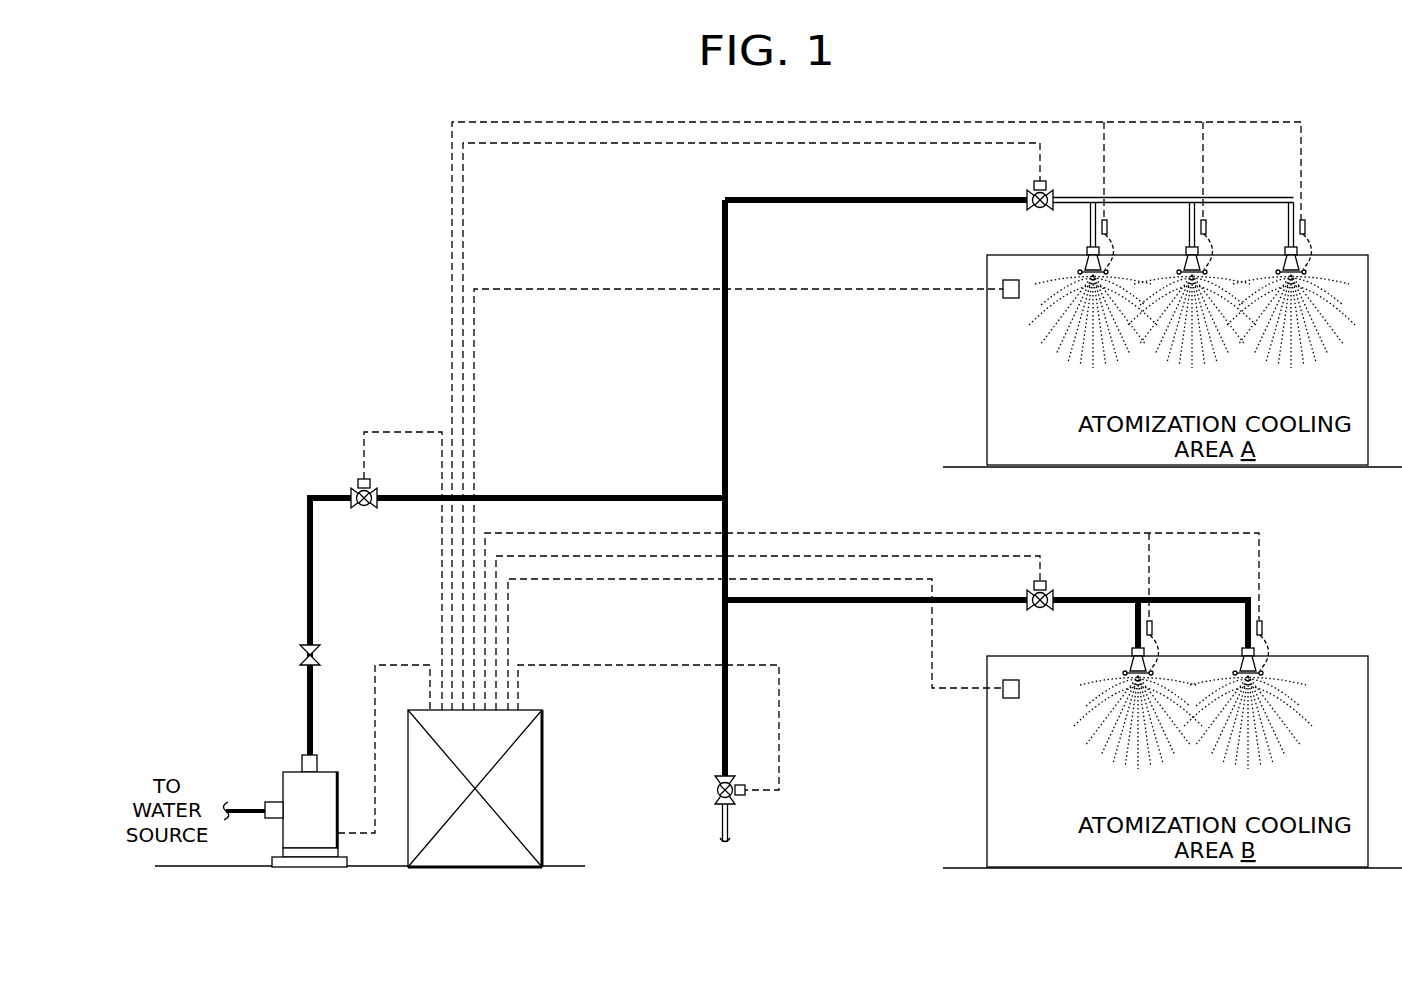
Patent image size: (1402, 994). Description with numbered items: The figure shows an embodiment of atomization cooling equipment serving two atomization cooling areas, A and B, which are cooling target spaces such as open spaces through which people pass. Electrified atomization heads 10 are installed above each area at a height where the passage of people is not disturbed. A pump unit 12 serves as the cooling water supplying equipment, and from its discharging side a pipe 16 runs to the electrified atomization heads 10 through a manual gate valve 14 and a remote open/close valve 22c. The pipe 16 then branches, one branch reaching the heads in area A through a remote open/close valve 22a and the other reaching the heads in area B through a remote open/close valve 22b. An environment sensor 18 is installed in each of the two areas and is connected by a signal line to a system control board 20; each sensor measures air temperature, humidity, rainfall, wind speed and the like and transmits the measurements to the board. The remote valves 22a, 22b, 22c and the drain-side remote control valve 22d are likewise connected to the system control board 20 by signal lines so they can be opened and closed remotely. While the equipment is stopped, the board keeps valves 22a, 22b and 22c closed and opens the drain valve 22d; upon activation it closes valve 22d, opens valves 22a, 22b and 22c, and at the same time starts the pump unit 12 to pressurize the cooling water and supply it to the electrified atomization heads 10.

The electrified atomization head 10 is at (1086, 270).
The pump unit 12 is at (284, 772).
The manual valve 14 is at (300, 656).
The pipe 16 is at (574, 497).
The environment sensor 18 is at (1003, 282).
The system control board 20 is at (545, 757).
The remote open/close valve 22a is at (1033, 191).
The remote open/close valve 22b is at (1052, 594).
The remote open/close valve 22c is at (366, 509).
The remote control valve 22d is at (714, 790).